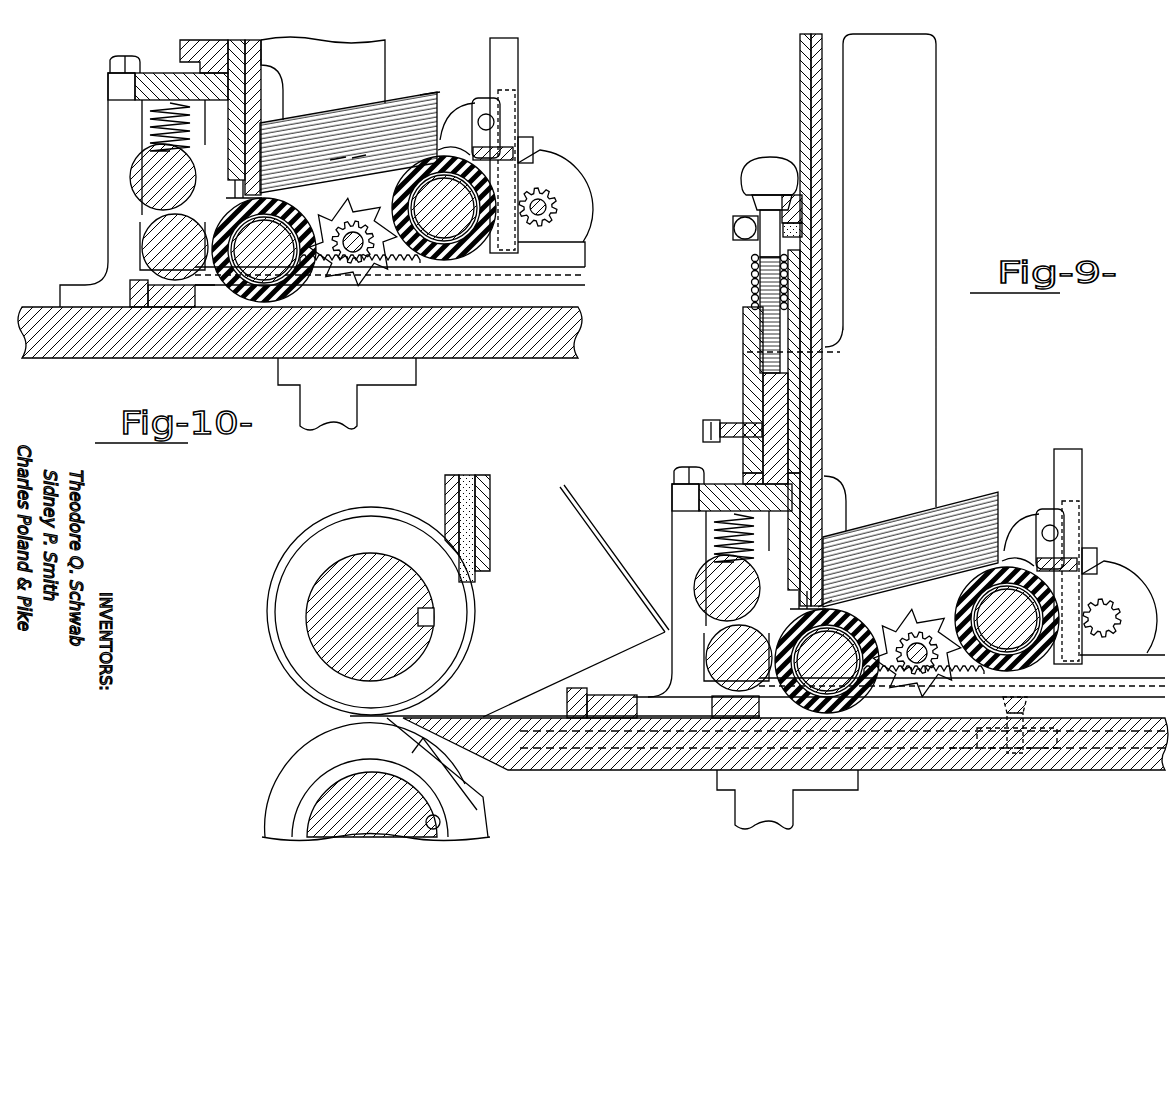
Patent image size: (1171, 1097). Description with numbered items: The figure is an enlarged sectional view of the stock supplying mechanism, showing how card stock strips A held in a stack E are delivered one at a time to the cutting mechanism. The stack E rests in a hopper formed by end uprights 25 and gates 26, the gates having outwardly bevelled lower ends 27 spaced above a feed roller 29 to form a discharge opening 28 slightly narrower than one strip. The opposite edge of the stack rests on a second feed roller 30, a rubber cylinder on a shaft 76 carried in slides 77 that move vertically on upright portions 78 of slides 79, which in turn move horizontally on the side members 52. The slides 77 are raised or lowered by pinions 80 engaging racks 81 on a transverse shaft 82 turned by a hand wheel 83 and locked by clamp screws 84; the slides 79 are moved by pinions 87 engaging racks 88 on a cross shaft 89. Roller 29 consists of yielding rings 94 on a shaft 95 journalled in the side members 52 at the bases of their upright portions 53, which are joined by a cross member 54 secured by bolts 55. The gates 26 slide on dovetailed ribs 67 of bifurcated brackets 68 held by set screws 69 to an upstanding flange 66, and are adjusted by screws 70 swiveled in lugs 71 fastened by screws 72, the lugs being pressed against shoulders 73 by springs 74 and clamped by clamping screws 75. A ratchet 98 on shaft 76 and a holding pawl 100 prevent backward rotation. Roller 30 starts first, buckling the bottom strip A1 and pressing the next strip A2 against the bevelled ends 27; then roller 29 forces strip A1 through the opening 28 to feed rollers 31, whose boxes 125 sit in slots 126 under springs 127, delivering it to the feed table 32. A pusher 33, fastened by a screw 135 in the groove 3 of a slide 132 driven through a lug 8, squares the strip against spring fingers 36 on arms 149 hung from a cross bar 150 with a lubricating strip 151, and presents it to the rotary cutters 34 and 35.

In FIG. 9, the undercut groove 3 is at (1076, 770).
In FIG. 10, the lug 8 is at (340, 390).
In FIG. 9, the lug 8 is at (735, 792).
In FIG. 10, the end uprights 25 is at (366, 65).
In FIG. 9, the end uprights 25 is at (937, 160).
In FIG. 10, the gates 26 is at (252, 88).
In FIG. 9, the gates 26 is at (806, 84).
In FIG. 9, the bevelled lower ends 27 is at (825, 593).
In FIG. 10, the discharge opening 28 is at (229, 196).
In FIG. 9, the discharge opening 28 is at (796, 608).
In FIG. 10, the feed roller 29 is at (250, 300).
In FIG. 9, the feed roller 29 is at (790, 680).
In FIG. 10, the feed roller 30 is at (450, 262).
In FIG. 9, the feed roller 30 is at (990, 668).
In FIG. 10, the feed rollers 31 is at (145, 240).
In FIG. 9, the feed rollers 31 is at (712, 646).
In FIG. 10, the feed table 32 is at (36, 318).
In FIG. 9, the feed table 32 is at (522, 776).
In FIG. 10, the pusher 33 is at (128, 286).
In FIG. 9, the pusher 33 is at (570, 690).
In FIG. 9, the rotary cutters 34 is at (290, 549).
In FIG. 9, the rotary cutters 35 is at (276, 802).
In FIG. 9, the spring fingers 36 is at (586, 674).
In FIG. 10, the side members 52 is at (573, 285).
In FIG. 9, the side members 52 is at (1160, 712).
In FIG. 10, the upright portions 53 is at (122, 141).
In FIG. 9, the upright portions 53 is at (680, 524).
In FIG. 10, the cross member 54 is at (118, 93).
In FIG. 9, the cross member 54 is at (682, 494).
In FIG. 10, the bolts 55 is at (118, 66).
In FIG. 9, the bolts 55 is at (682, 476).
In FIG. 9, the upstanding flange 66 is at (778, 388).
In FIG. 9, the dovetailed ribs 67 is at (800, 278).
In FIG. 9, the bifurcated brackets 68 is at (744, 370).
In FIG. 9, the set screws 69 is at (708, 421).
In FIG. 9, the adjusting screws 70 is at (760, 168).
In FIG. 9, the lugs 71 is at (794, 205).
In FIG. 9, the screws 72 is at (806, 228).
In FIG. 9, the shoulders 73 is at (754, 205).
In FIG. 9, the springs 74 is at (752, 274).
In FIG. 9, the clamping screws 75 is at (736, 232).
In FIG. 10, the shaft 76 is at (565, 166).
In FIG. 9, the shaft 76 is at (1124, 575).
In FIG. 10, the slides 77 is at (483, 98).
In FIG. 9, the slides 77 is at (1047, 509).
In FIG. 10, the upright portions 78 is at (512, 62).
In FIG. 9, the upright portions 78 is at (1068, 460).
In FIG. 10, the slides 79 is at (565, 258).
In FIG. 9, the slides 79 is at (1138, 666).
In FIG. 10, the pinions 80 is at (560, 200).
In FIG. 9, the pinions 80 is at (1118, 612).
In FIG. 10, the racks 81 is at (516, 96).
In FIG. 9, the racks 81 is at (1080, 504).
In FIG. 10, the transverse shaft 82 is at (548, 208).
In FIG. 9, the transverse shaft 82 is at (1112, 614).
In FIG. 10, the hand wheel 83 is at (535, 150).
In FIG. 9, the hand wheel 83 is at (1100, 560).
In FIG. 10, the clamp screws 84 is at (520, 150).
In FIG. 9, the clamp screws 84 is at (1084, 560).
In FIG. 10, the pinions 87 is at (350, 226).
In FIG. 9, the pinions 87 is at (914, 630).
In FIG. 10, the racks 88 is at (358, 262).
In FIG. 9, the racks 88 is at (905, 668).
In FIG. 10, the cross shaft 89 is at (345, 268).
In FIG. 9, the cross shaft 89 is at (918, 672).
In FIG. 10, the rings 94 is at (300, 298).
In FIG. 9, the rings 94 is at (810, 700).
In FIG. 10, the shaft 95 is at (215, 298).
In FIG. 9, the shaft 95 is at (828, 690).
In FIG. 10, the ratchet 98 is at (480, 244).
In FIG. 9, the ratchet 98 is at (1030, 660).
In FIG. 10, the holding pawl 100 is at (456, 118).
In FIG. 9, the holding pawl 100 is at (1020, 530).
In FIG. 9, the boxes 125 is at (750, 572).
In FIG. 9, the slots 126 is at (712, 546).
In FIG. 9, the springs 127 is at (748, 482).
In FIG. 9, the slide 132 is at (560, 730).
In FIG. 9, the screw 135 is at (1014, 752).
In FIG. 9, the arms 149 is at (592, 540).
In FIG. 9, the cross bar 150 is at (484, 478).
In FIG. 9, the lubricating strip 151 is at (481, 508).
In FIG. 10, the strips A is at (428, 95).
In FIG. 9, the strips A is at (500, 716).
In FIG. 10, the bottom strip A1 is at (338, 168).
In FIG. 10, the next adjacent strip A2 is at (358, 168).
In FIG. 10, the stack E is at (415, 90).
In FIG. 9, the stack E is at (972, 499).